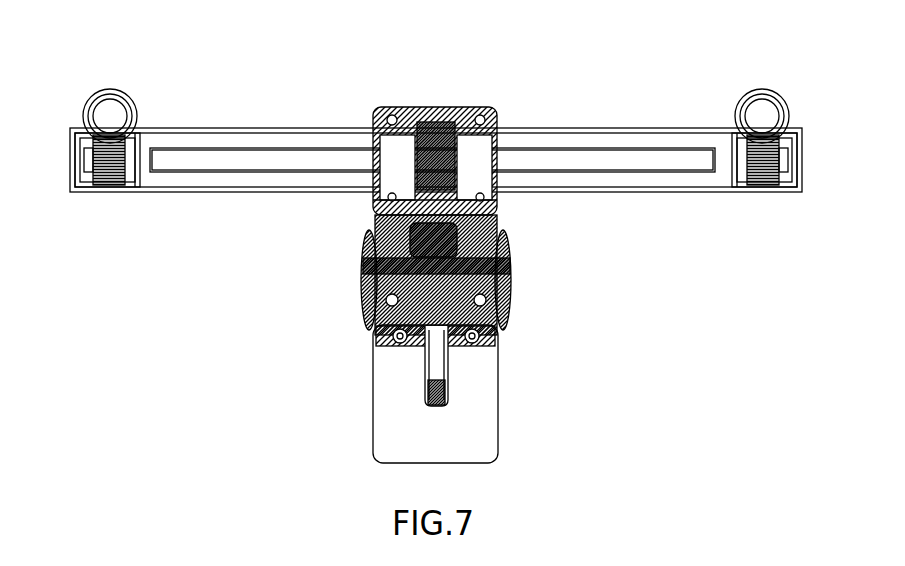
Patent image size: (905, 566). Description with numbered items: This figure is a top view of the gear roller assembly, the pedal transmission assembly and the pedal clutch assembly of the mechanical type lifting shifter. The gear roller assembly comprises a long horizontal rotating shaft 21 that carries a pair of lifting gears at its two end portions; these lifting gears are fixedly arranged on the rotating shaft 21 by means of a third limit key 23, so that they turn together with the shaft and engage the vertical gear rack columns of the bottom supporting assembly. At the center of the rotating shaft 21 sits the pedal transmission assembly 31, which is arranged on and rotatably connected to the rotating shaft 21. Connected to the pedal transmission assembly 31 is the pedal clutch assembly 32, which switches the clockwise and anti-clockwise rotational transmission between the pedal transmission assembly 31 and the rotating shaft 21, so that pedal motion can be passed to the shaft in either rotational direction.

The rotating shaft 21 is at (573, 160).
The third limit key 23 is at (128, 182).
The pedal transmission assembly 31 is at (441, 383).
The pedal clutch assembly 32 is at (442, 108).